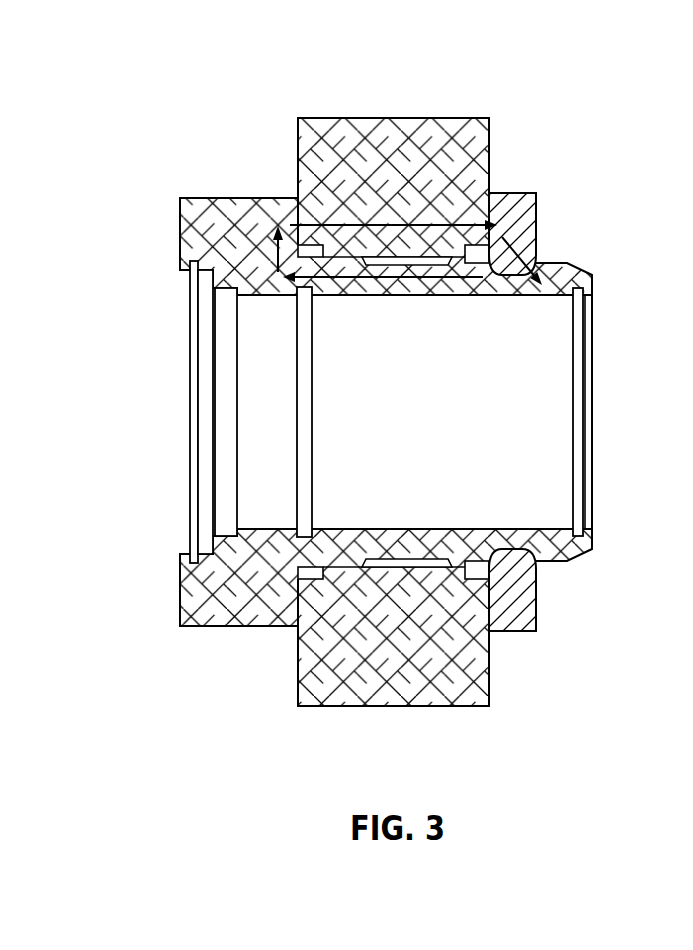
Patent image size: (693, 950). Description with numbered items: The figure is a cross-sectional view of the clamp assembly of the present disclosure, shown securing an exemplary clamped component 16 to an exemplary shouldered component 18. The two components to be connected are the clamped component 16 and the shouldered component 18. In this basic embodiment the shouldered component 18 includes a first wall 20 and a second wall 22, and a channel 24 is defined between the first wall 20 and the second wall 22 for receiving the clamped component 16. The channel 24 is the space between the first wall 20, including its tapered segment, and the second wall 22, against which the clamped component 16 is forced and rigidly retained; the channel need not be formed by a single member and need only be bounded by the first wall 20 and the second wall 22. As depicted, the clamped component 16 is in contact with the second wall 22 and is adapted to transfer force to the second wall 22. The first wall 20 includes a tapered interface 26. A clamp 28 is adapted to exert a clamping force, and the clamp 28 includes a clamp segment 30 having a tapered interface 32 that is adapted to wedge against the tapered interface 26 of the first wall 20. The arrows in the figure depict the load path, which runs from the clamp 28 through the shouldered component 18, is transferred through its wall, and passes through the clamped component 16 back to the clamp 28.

The clamped component 16 is at (328, 120).
The shouldered component 18 is at (194, 204).
The first wall 20 is at (541, 548).
The second wall 22 is at (250, 620).
The channel 24 is at (365, 566).
The tapered interface 26 is at (536, 560).
The clamp 28 is at (520, 682).
The clamp segment 30 is at (536, 605).
The tapered interface 32 is at (513, 583).